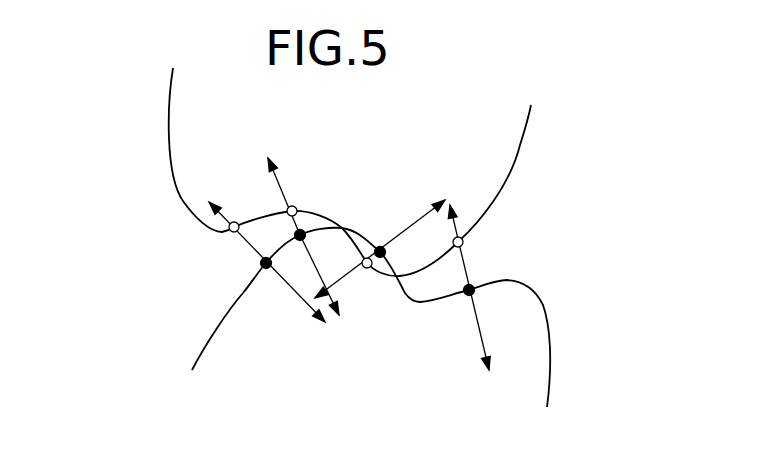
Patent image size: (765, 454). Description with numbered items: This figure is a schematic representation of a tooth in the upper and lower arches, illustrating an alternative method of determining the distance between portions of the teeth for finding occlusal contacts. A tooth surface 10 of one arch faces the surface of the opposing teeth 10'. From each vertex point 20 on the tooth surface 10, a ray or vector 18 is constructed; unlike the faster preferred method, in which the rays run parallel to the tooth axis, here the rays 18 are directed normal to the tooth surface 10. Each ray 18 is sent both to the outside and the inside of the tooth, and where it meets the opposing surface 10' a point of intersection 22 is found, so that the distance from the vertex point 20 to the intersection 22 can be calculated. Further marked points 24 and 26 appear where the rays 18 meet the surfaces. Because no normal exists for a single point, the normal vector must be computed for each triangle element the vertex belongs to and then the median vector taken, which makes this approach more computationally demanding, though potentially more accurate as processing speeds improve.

The tooth surface 10 is at (404, 317).
The surface of opposing teeth 10' is at (384, 172).
The ray 18 is at (247, 242).
The vertex point 20 is at (266, 263).
The point of intersection 22 is at (229, 229).
The incidence point 24 is at (367, 268).
The refraction point 26 is at (380, 247).